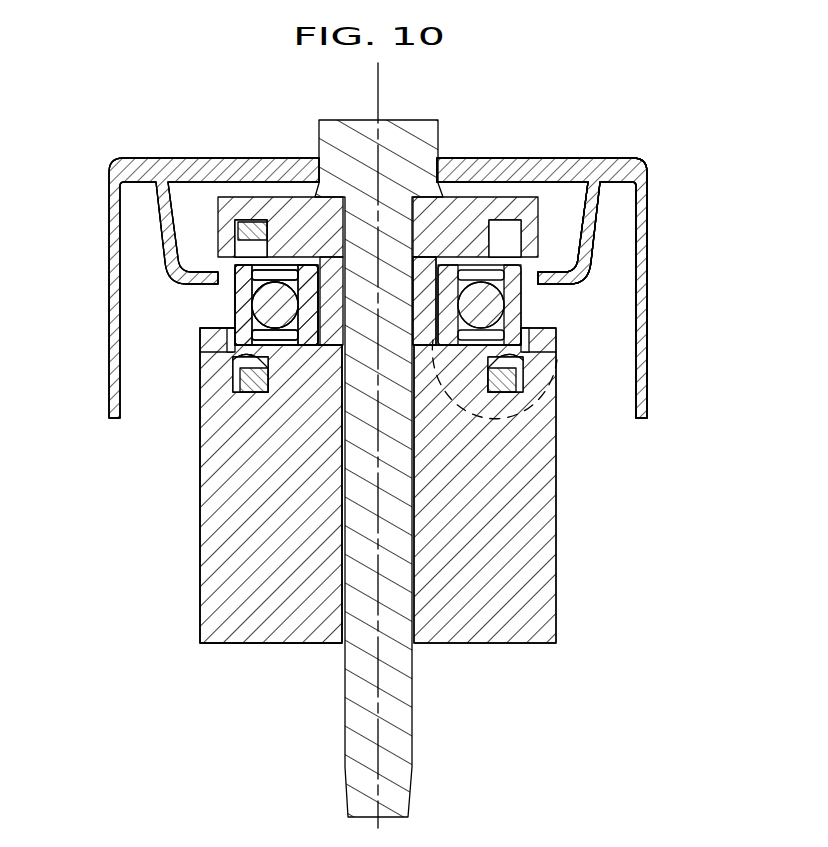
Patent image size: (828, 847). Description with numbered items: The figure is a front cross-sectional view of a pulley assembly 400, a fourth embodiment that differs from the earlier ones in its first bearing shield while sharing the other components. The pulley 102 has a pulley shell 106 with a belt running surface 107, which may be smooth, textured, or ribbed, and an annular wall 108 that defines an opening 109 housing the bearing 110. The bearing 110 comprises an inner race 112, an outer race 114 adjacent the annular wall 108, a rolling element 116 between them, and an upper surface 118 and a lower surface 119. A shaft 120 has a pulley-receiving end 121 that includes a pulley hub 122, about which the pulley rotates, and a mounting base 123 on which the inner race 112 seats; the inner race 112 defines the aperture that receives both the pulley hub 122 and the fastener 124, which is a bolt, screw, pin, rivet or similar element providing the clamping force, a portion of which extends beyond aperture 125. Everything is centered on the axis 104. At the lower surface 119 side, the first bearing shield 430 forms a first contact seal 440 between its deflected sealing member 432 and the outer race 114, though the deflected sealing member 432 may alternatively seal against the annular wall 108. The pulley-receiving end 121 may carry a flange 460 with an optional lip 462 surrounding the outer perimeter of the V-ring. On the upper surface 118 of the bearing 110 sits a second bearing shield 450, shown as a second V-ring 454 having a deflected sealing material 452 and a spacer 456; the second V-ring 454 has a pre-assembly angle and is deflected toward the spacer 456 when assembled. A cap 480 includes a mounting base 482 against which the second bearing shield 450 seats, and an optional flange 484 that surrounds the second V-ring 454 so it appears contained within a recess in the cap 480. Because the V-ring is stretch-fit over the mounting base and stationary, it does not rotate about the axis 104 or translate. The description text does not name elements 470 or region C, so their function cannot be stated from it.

The pulley assembly 400 is at (618, 122).
The pulley 102 is at (180, 158).
The axis 104 is at (380, 70).
The pulley shell 106 is at (640, 304).
The belt running surface 107 is at (645, 382).
The annular wall 108 is at (524, 302).
The opening 109 is at (590, 276).
The bearing 110 is at (222, 289).
The inner race 112 is at (310, 252).
The outer race 114 is at (238, 306).
The rolling element 116 is at (236, 312).
The upper surface 118 is at (270, 258).
The lower surface 119 is at (296, 358).
The shaft 120 is at (543, 580).
The pulley-receiving end 121 is at (340, 322).
The pulley hub 122 is at (428, 335).
The mounting base 123 is at (276, 346).
The fastener 124 is at (410, 745).
The aperture 125 is at (436, 298).
The first bearing shield 430 is at (532, 376).
The deflected sealing member 432 is at (508, 366).
The first contact seal 440 is at (236, 379).
The second bearing shield 450 is at (548, 221).
The deflected sealing material 452 is at (240, 268).
The second V-ring 454 is at (240, 238).
The spacer 456 is at (252, 240).
The flange 460 is at (224, 388).
The lip 462 is at (222, 336).
The seal carrier 470 is at (534, 258).
The cap 480 is at (468, 212).
The mounting base 482 is at (478, 248).
The flange 484 is at (250, 248).
The cavity region C is at (524, 428).